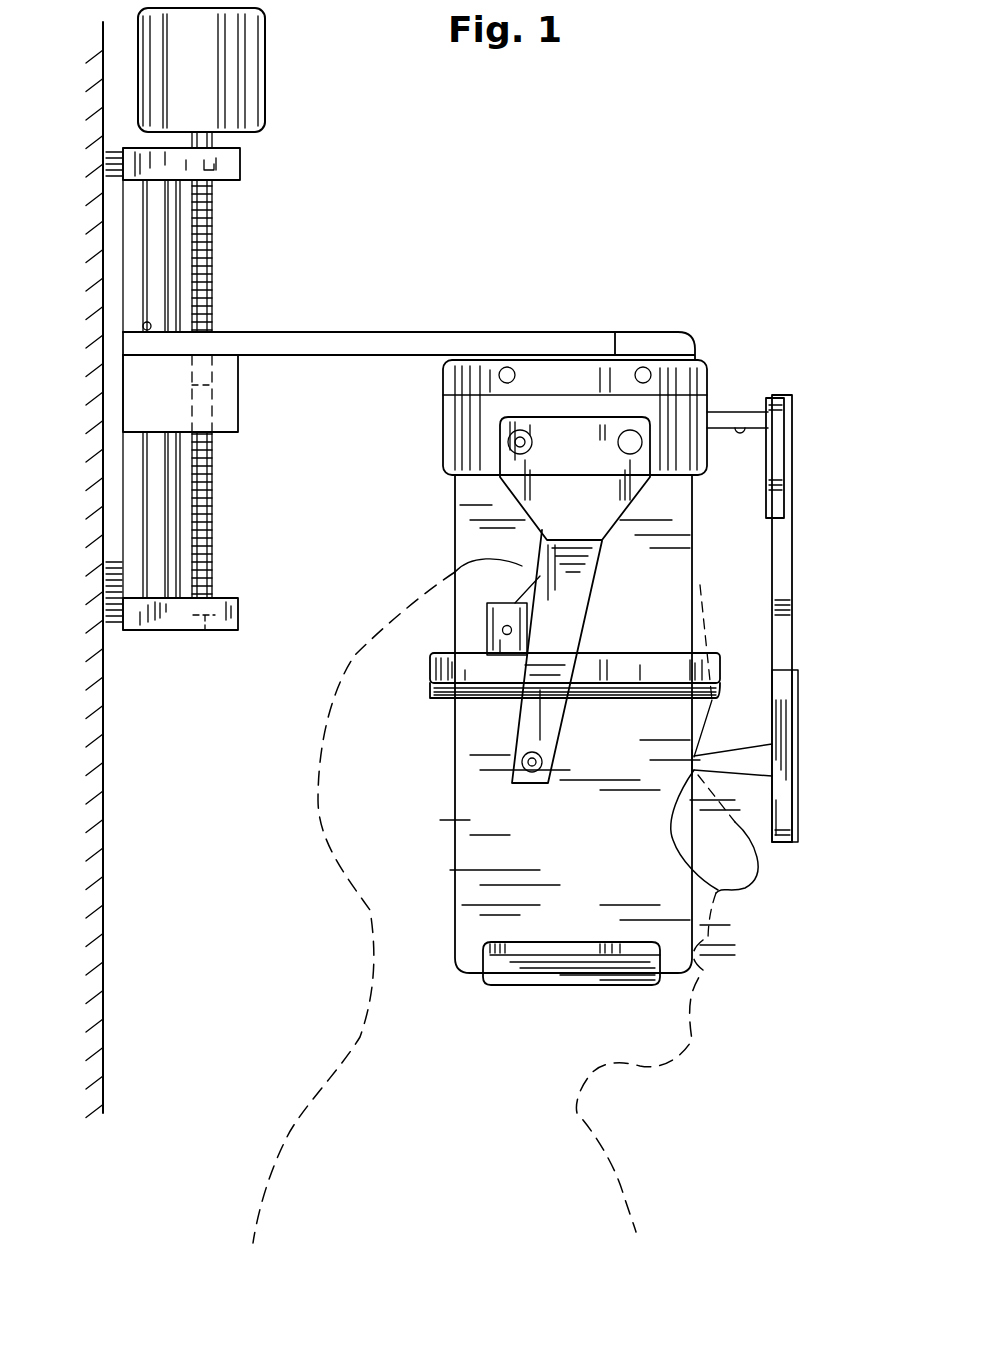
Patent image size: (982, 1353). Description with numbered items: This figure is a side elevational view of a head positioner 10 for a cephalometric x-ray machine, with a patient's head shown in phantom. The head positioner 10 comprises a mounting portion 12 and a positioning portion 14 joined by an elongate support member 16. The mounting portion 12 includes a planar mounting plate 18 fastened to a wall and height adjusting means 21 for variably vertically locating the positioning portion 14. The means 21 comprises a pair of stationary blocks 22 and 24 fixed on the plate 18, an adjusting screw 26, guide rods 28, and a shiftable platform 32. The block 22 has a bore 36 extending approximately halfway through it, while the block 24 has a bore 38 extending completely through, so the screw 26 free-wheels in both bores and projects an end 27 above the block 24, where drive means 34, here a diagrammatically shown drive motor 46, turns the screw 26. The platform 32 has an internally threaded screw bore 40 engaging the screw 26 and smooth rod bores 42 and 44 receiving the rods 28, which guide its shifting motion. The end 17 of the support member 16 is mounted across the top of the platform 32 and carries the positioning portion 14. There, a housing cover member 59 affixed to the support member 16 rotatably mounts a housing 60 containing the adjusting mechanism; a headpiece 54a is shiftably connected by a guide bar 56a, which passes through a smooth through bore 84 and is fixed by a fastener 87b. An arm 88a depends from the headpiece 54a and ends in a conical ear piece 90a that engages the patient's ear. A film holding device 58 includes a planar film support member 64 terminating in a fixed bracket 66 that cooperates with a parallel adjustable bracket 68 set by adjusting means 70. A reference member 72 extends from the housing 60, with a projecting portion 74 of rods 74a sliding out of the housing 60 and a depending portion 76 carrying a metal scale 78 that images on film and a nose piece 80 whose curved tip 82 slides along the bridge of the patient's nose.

The head positioner 10 is at (642, 126).
The mounting portion 12 is at (328, 170).
The positioning portion 14 is at (608, 272).
The elongate support member 16 is at (361, 332).
The end of support member 17 is at (124, 341).
The mounting plate 18 is at (109, 625).
The height adjusting means 21 is at (226, 311).
The stationary block 22 is at (210, 640).
The stationary block 24 is at (228, 180).
The adjusting screw 26 is at (216, 228).
The end of screw 27 is at (215, 139).
The guide rod 28 is at (179, 278).
The shiftable platform 32 is at (208, 394).
The drive means 34 is at (232, 70).
The bore 36 is at (205, 636).
The bore 38 is at (242, 172).
The internally threaded screw bore 40 is at (215, 397).
The left rod bore 42 is at (108, 340).
The right rod bore 44 is at (145, 320).
The drive motor 46 is at (207, 106).
The headpiece 54a is at (545, 497).
The guide bar 56a is at (700, 355).
The film holding device 58 is at (452, 512).
The housing cover member 59 is at (660, 372).
The housing 60 is at (559, 371).
The film support member 64 is at (457, 545).
The fixed bracket 66 is at (453, 966).
The adjustable bracket 68 is at (473, 700).
The adjusting means 70 is at (480, 611).
The reference member 72 is at (794, 400).
The projecting portion 74 is at (775, 617).
The rod 74a is at (742, 428).
The depending portion 76 is at (793, 580).
The scale 78 is at (790, 843).
The nose piece 80 is at (745, 758).
The curved tip 82 is at (718, 893).
The through bore 84 is at (628, 440).
The fastener 87b is at (526, 400).
The arm 88a is at (557, 590).
The ear piece 90a is at (512, 778).